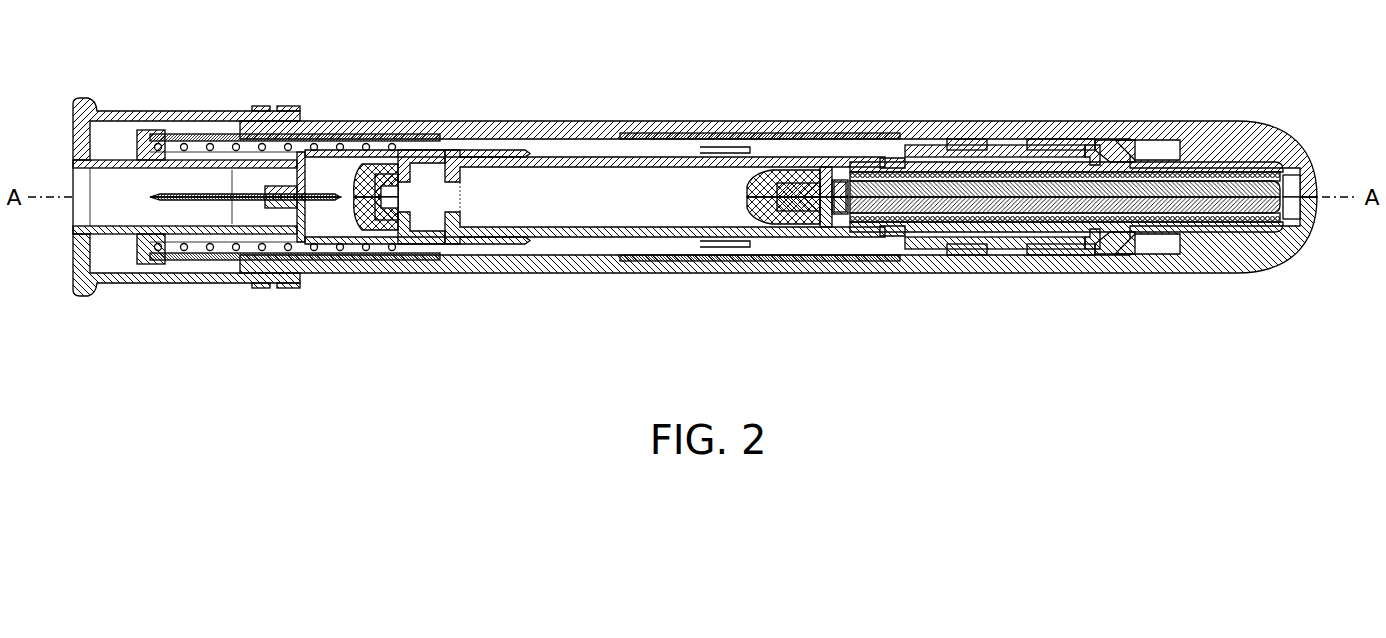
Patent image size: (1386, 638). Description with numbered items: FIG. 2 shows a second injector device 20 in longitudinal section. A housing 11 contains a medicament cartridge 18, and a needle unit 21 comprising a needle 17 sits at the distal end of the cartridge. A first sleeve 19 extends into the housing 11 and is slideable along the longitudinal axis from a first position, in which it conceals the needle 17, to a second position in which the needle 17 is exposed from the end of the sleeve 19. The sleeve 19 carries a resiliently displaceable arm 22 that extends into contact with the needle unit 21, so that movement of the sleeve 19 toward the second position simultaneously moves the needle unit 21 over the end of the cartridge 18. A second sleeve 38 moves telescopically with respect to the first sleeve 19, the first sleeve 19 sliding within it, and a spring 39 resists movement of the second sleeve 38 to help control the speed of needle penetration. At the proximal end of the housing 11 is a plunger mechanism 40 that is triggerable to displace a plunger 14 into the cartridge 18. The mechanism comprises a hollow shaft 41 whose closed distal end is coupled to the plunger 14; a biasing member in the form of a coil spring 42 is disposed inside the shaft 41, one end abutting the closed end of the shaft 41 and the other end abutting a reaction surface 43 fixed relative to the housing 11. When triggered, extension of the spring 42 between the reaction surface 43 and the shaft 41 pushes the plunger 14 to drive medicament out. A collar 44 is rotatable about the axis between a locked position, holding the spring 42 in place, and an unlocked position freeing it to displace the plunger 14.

The injector device 20 is at (686, 64).
The housing 11 is at (574, 273).
The plunger 14 is at (772, 180).
The needle 17 is at (205, 202).
The medicament cartridge 18 is at (682, 232).
The sleeve 19 is at (124, 256).
The needle unit 21 is at (294, 220).
The resiliently displaceable arm 22 is at (305, 158).
The second sleeve 38 is at (172, 138).
The spring 39 is at (215, 143).
The plunger mechanism 40 is at (1022, 134).
The shaft 41 is at (843, 228).
The biasing member 42 is at (1016, 227).
The reaction surface 43 is at (1290, 184).
The collar 44 is at (1068, 247).